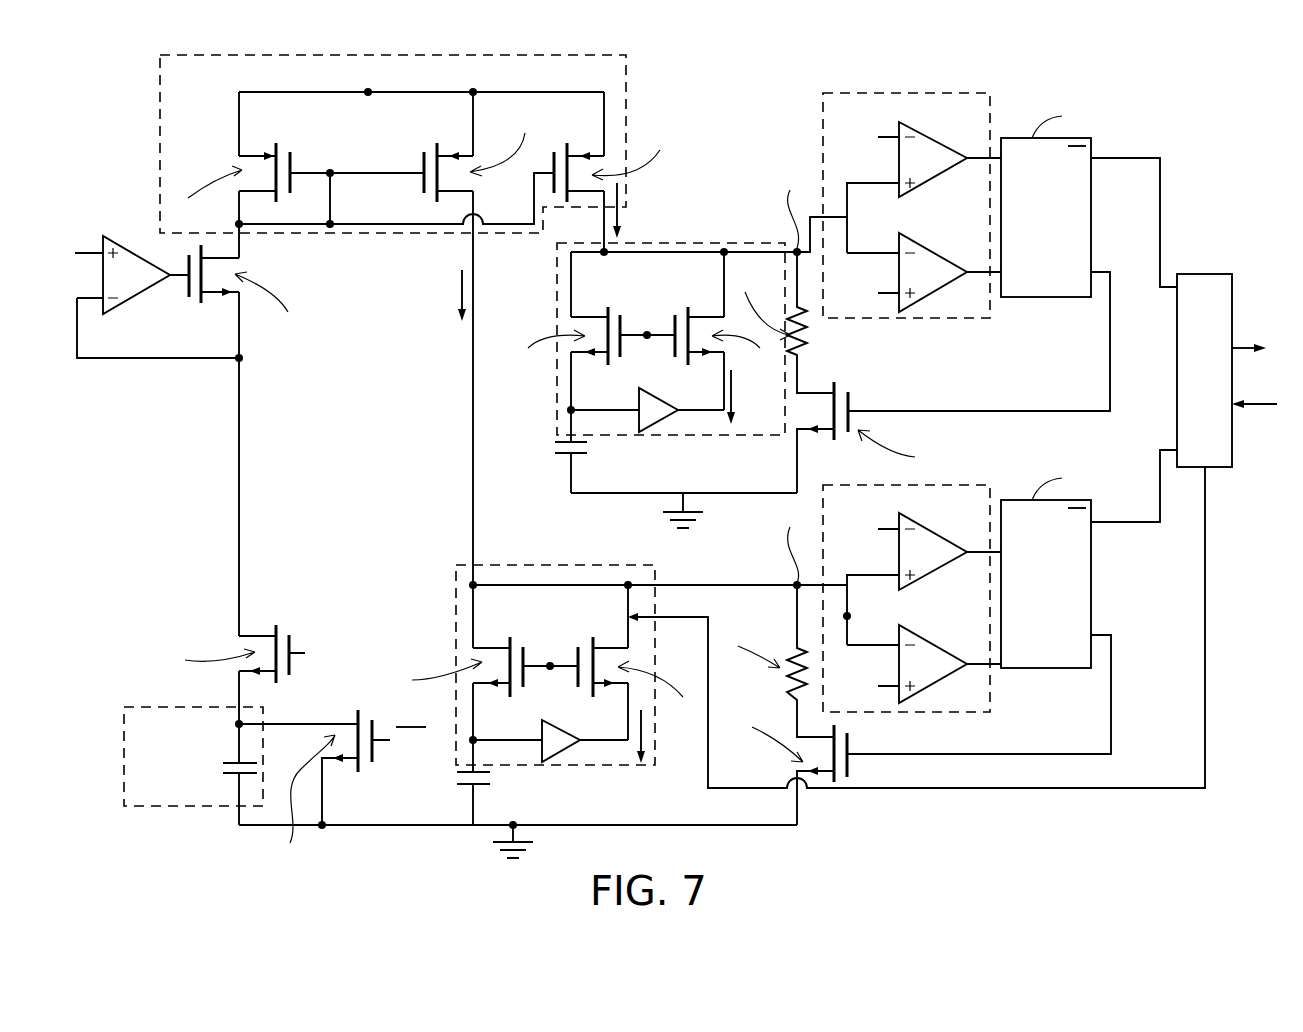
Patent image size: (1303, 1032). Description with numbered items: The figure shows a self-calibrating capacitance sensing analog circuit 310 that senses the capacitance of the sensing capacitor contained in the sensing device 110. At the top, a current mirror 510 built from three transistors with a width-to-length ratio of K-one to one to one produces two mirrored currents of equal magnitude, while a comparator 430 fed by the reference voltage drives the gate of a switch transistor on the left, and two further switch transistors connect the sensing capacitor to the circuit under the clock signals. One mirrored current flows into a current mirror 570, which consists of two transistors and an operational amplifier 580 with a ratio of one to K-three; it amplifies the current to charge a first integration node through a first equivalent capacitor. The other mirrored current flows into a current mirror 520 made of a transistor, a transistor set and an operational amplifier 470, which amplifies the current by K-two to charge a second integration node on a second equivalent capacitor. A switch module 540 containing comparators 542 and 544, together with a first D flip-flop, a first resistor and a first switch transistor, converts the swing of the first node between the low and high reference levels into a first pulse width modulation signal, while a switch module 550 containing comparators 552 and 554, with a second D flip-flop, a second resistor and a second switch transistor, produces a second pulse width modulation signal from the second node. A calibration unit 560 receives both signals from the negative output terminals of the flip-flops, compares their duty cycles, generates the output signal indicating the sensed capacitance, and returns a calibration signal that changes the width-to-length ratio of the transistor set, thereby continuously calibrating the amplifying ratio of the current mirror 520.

The sensing device 110 is at (160, 706).
The capacitance sensing analog circuit 310 is at (1165, 98).
The comparator 430 is at (135, 300).
The operational amplifier 470 is at (565, 724).
The current mirror 510 is at (628, 100).
The current mirror 520 is at (615, 565).
The switch module 540 is at (955, 93).
The comparator 542 is at (908, 122).
The comparator 544 is at (908, 233).
The switch module 550 is at (958, 712).
The comparator 552 is at (908, 513).
The comparator 554 is at (908, 625).
The calibration unit 560 is at (1195, 274).
The current mirror 570 is at (688, 243).
The operational amplifier 580 is at (663, 392).